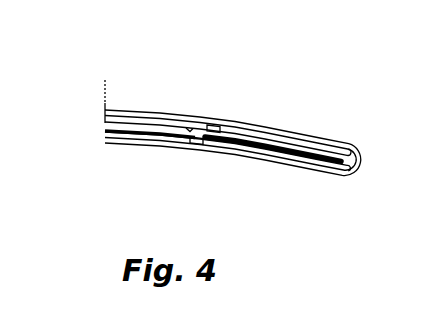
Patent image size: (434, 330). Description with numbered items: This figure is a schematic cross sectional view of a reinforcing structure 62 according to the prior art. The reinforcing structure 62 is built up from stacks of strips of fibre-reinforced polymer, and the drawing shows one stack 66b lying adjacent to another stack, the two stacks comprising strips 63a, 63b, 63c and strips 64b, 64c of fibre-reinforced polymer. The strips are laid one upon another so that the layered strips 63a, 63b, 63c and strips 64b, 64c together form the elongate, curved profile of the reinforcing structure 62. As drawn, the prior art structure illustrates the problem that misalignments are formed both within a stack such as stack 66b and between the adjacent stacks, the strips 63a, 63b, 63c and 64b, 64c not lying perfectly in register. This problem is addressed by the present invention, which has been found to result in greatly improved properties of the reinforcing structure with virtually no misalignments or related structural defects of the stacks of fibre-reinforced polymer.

The reinforcing structure 62 is at (179, 64).
The strip 63a is at (136, 148).
The strip 63b is at (104, 135).
The strip 63c is at (125, 114).
The strip 64b is at (262, 149).
The strip 64c is at (280, 140).
The stack 66b is at (322, 182).